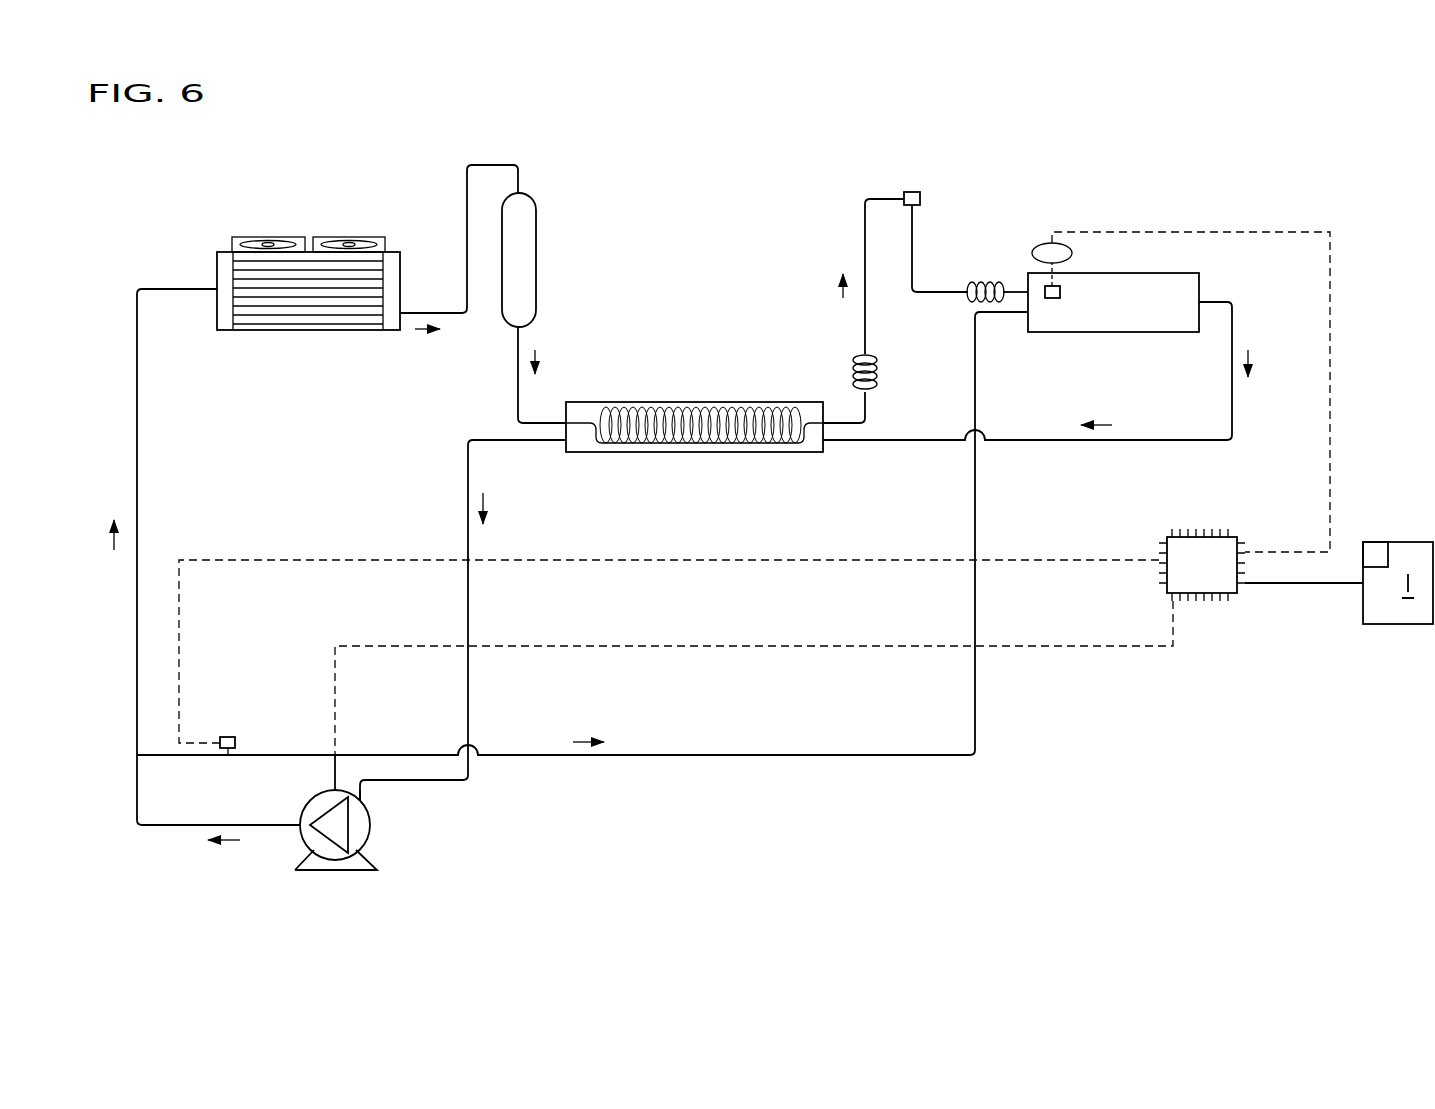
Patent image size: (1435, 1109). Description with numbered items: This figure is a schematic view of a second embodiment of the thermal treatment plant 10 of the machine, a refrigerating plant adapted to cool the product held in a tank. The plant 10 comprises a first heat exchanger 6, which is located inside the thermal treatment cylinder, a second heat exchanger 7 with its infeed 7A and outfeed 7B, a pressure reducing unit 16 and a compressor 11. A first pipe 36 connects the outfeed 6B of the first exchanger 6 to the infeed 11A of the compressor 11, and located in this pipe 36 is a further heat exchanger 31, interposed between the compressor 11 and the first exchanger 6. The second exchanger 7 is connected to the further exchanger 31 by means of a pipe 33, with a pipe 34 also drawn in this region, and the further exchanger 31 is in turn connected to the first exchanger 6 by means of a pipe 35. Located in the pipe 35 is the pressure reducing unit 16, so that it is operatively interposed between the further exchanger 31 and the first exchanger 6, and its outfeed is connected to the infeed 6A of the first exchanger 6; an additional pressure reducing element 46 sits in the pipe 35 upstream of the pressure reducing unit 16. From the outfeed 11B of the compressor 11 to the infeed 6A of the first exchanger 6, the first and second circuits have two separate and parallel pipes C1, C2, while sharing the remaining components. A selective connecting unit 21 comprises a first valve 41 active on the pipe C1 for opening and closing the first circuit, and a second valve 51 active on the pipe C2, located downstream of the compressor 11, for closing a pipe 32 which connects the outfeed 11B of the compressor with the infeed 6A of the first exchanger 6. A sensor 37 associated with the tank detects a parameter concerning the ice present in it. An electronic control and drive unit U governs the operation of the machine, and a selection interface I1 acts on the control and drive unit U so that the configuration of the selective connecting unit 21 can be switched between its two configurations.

The second heat exchanger 7 is at (311, 232).
The infeed of the second exchanger 7A is at (187, 288).
The outfeed of the second exchanger 7B is at (428, 310).
The pipe 33 is at (538, 202).
The pipe from receiver to heat exchanger 34 is at (513, 375).
The further heat exchanger 31 is at (649, 399).
The pipe 35 is at (860, 222).
The additional pressure reducing element 46 is at (850, 375).
The selective connecting unit 21 is at (877, 134).
The first valve 41 is at (899, 178).
The pressure reducing unit 16 is at (985, 270).
The infeed of the first exchanger 6A is at (1017, 287).
The first heat exchanger 6 is at (1156, 269).
The sensor 37 is at (1069, 292).
The thermal treatment plant 10 is at (1247, 292).
The outfeed of the first exchanger 6B is at (1214, 295).
The first pipe 36 is at (461, 467).
The pipe 32 is at (784, 759).
The compressor 11 is at (364, 879).
The infeed of the compressor 11A is at (369, 794).
The outfeed of the compressor 11B is at (278, 836).
The second valve 51 is at (232, 729).
The control and drive unit U is at (1216, 601).
The input device I1 is at (1381, 539).
The pipe C1 is at (131, 621).
The pipe C2 is at (157, 759).